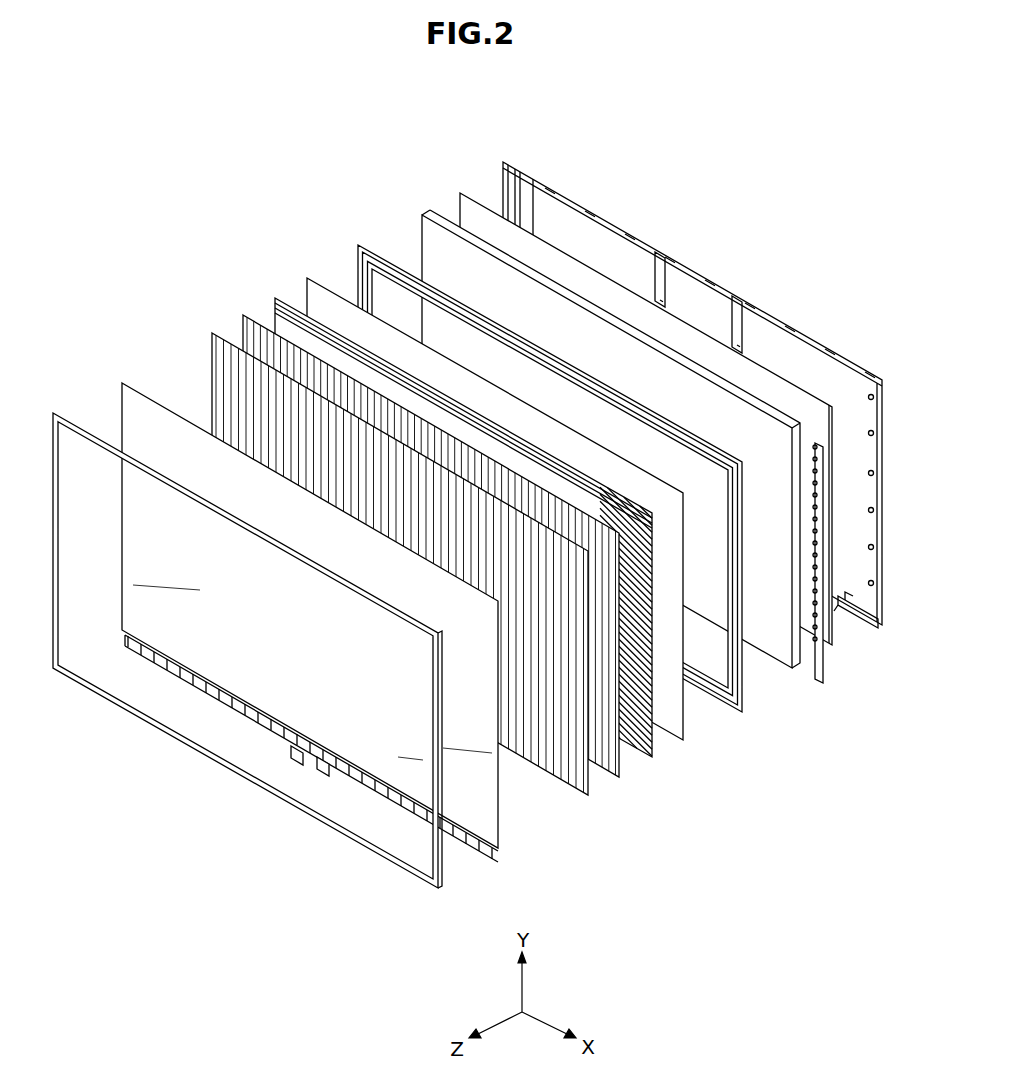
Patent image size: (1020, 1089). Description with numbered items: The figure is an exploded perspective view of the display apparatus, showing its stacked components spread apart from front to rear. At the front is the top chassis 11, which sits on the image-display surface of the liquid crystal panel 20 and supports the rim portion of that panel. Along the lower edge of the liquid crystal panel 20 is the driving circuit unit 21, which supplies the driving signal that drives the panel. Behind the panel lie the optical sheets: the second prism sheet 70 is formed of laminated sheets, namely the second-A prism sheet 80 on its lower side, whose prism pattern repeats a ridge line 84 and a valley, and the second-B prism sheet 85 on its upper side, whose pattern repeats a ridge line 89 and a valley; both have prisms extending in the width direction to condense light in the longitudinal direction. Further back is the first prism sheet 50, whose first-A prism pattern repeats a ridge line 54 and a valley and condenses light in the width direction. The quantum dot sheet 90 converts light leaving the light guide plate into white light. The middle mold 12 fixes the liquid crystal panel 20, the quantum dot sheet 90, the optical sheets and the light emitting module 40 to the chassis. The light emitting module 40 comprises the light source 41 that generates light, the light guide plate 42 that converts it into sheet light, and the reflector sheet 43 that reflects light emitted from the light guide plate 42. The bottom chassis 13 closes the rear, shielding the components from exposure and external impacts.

The top chassis 11 is at (66, 414).
The middle mold 12 is at (358, 246).
The bottom chassis 13 is at (505, 165).
The liquid crystal panel 20 is at (124, 384).
The driving circuit unit 21 is at (163, 668).
The light emitting module 40 is at (659, 490).
The light source 41 is at (825, 678).
The light guide plate 42 is at (611, 491).
The reflector sheet 43 is at (834, 636).
The first prism sheet 50 is at (278, 298).
The ridge line 54 is at (650, 750).
The second prism sheet 70 is at (394, 532).
The second-A prism sheet 80 is at (244, 318).
The ridge line 84 is at (617, 772).
The second-B prism sheet 85 is at (212, 338).
The ridge line 89 is at (560, 770).
The quantum dot sheet 90 is at (316, 280).